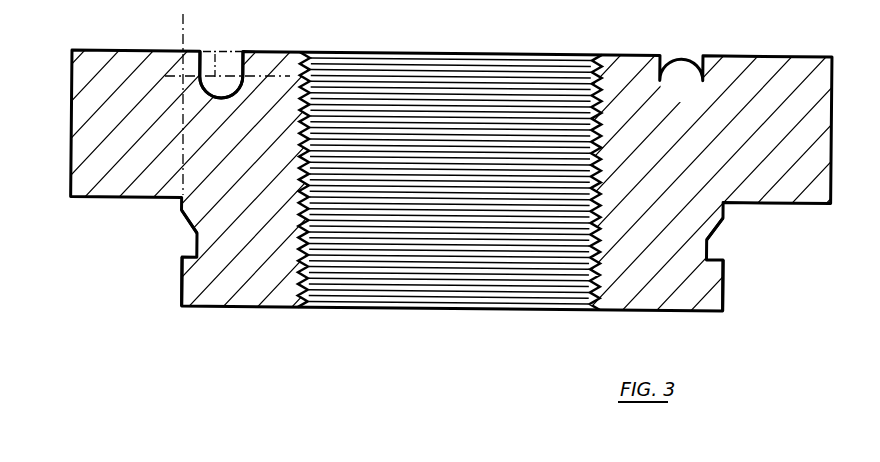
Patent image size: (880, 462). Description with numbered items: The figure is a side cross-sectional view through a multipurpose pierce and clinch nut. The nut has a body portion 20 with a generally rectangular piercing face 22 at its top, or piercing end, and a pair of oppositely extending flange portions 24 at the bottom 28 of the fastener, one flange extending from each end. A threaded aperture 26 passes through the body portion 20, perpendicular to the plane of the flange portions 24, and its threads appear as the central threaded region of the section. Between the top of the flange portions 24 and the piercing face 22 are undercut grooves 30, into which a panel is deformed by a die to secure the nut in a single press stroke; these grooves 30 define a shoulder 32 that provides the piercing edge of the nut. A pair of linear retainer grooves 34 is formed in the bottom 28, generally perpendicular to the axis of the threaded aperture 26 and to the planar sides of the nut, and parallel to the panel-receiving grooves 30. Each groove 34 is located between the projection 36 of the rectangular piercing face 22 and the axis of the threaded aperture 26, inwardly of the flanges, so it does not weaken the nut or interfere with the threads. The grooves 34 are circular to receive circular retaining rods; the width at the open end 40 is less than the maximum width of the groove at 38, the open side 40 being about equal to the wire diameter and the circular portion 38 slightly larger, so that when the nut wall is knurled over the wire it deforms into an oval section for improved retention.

The body portion 20 is at (218, 288).
The piercing face 22 is at (650, 310).
The flange portions 24 is at (93, 62).
The threaded aperture 26 is at (588, 58).
The bottom 28 is at (466, 53).
The undercut grooves 30 is at (195, 240).
The shoulder 32 is at (182, 283).
The retainer grooves 34 is at (223, 87).
The projection of the rectangular piercing face 36 is at (182, 157).
The maximum width of the groove 38 is at (214, 55).
The open end of the groove 40 is at (235, 51).